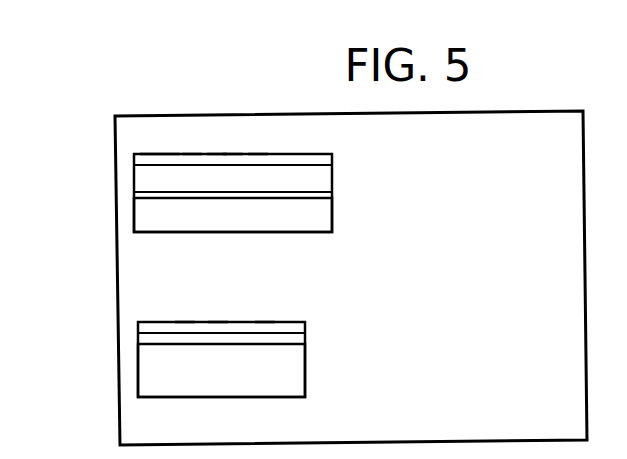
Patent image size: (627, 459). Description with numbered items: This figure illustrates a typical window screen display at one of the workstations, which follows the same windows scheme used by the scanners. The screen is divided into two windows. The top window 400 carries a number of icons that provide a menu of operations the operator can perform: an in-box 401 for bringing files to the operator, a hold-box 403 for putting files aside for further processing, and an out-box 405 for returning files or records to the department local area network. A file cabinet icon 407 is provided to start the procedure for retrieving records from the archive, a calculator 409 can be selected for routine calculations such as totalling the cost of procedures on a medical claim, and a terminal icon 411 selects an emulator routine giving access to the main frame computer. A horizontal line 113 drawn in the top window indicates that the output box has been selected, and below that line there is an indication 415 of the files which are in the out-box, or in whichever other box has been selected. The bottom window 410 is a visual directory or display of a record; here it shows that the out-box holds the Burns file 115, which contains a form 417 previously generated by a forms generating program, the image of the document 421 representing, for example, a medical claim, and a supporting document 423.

The top window 400 is at (348, 167).
The horizontal line 113 is at (332, 195).
The "Burns" file 115 is at (130, 220).
The "in"-box 401 is at (150, 150).
The "hold"-box 403 is at (170, 150).
The "out"-box 405 is at (192, 150).
The surface region 407 is at (217, 150).
The calculator 409 is at (233, 150).
The terminal icon 411 is at (258, 150).
The bottom window 410 is at (315, 350).
The form 417 is at (130, 363).
The indication of files 415 is at (185, 318).
The image of the document 421 is at (218, 318).
The supporting document 423 is at (265, 318).